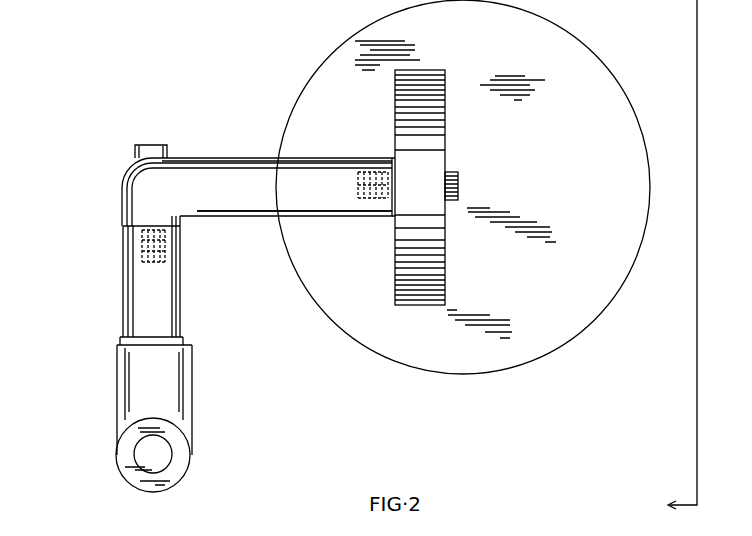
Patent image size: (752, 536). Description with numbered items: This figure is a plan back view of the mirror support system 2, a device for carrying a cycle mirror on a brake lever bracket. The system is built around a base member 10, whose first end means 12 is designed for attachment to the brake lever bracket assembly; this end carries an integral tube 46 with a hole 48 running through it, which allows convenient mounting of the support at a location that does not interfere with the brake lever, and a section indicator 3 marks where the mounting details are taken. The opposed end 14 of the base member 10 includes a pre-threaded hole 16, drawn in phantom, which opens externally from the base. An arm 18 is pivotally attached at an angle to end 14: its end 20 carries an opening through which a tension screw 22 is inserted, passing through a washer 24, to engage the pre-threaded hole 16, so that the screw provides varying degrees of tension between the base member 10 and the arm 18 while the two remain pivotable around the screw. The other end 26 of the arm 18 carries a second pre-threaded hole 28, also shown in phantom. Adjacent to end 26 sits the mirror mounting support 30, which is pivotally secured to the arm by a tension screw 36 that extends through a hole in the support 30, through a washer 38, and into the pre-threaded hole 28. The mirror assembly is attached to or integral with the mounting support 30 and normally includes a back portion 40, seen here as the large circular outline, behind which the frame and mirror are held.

The mirror support system 2 is at (110, 195).
The section line for FIG. 3 is at (693, 257).
The base member 10 is at (176, 320).
The first end means 12 is at (108, 454).
The end 14 is at (182, 246).
The pre-threaded hole 16 is at (178, 258).
The arm 18 is at (216, 168).
The end 20 is at (128, 180).
The tension screw 22 is at (150, 150).
The washer 24 is at (127, 225).
The end 26 is at (347, 208).
The pre-threaded hole 28 is at (367, 172).
The mirror mounting support 30 is at (446, 258).
The tension screw 36 is at (458, 186).
The washer 38 is at (393, 218).
The back portion 40 is at (563, 197).
The tube 46 is at (175, 480).
The hole 48 is at (140, 471).